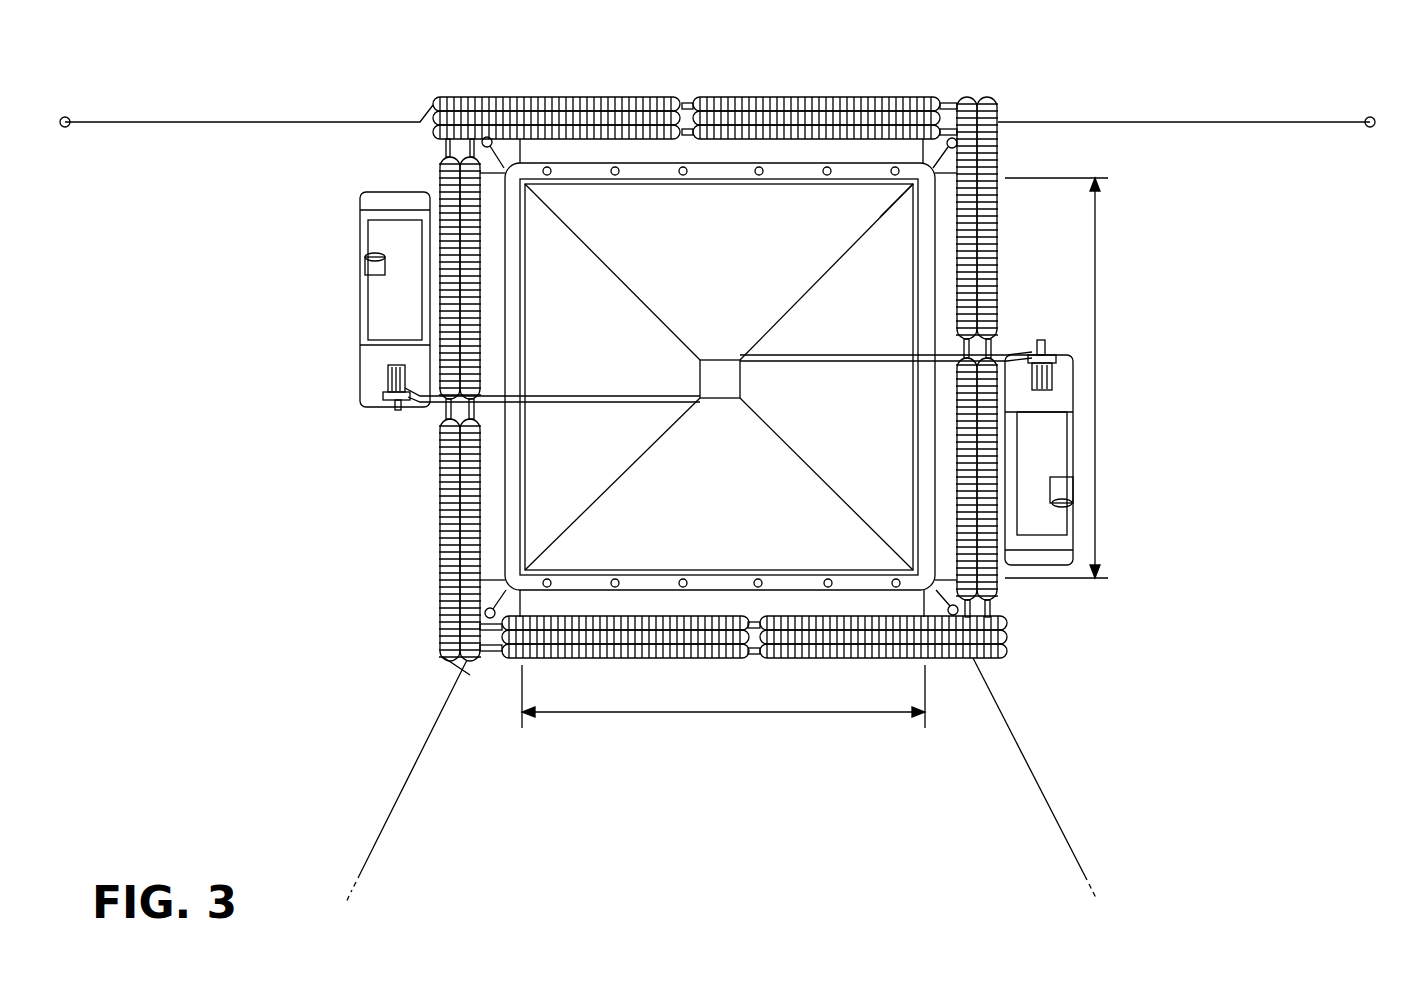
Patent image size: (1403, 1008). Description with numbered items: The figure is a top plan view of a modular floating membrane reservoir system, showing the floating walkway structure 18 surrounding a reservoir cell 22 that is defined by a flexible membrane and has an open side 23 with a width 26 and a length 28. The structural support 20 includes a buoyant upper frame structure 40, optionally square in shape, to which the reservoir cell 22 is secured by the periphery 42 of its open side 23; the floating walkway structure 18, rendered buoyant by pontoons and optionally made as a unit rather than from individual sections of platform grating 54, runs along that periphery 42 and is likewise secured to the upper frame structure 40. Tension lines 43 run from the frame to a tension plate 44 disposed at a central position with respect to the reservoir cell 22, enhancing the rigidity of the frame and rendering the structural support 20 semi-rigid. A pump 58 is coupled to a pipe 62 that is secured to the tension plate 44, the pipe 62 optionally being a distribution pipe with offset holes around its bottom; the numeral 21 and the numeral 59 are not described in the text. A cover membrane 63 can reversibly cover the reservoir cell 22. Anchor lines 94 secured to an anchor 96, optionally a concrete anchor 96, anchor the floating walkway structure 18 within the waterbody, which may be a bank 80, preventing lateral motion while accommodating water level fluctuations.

The floating walkway structure 18 is at (1005, 92).
The structural support 20 is at (577, 170).
The float 21 is at (743, 629).
The reservoir cell 22 is at (702, 180).
The open side 23 is at (745, 180).
The width 26 is at (780, 713).
The length 28 is at (1098, 280).
The upper frame structure 40 is at (510, 222).
The periphery 42 is at (915, 200).
The tension lines 43 is at (877, 210).
The tension plate 44 is at (720, 385).
The platform grating 54 is at (445, 660).
The pump 58 is at (388, 378).
The pump housing 59 is at (1039, 452).
The pipe 62 is at (805, 355).
The cover membrane 63 is at (647, 205).
The bank 80 is at (365, 892).
The anchor lines 94 is at (165, 122).
The anchor 96 is at (67, 117).